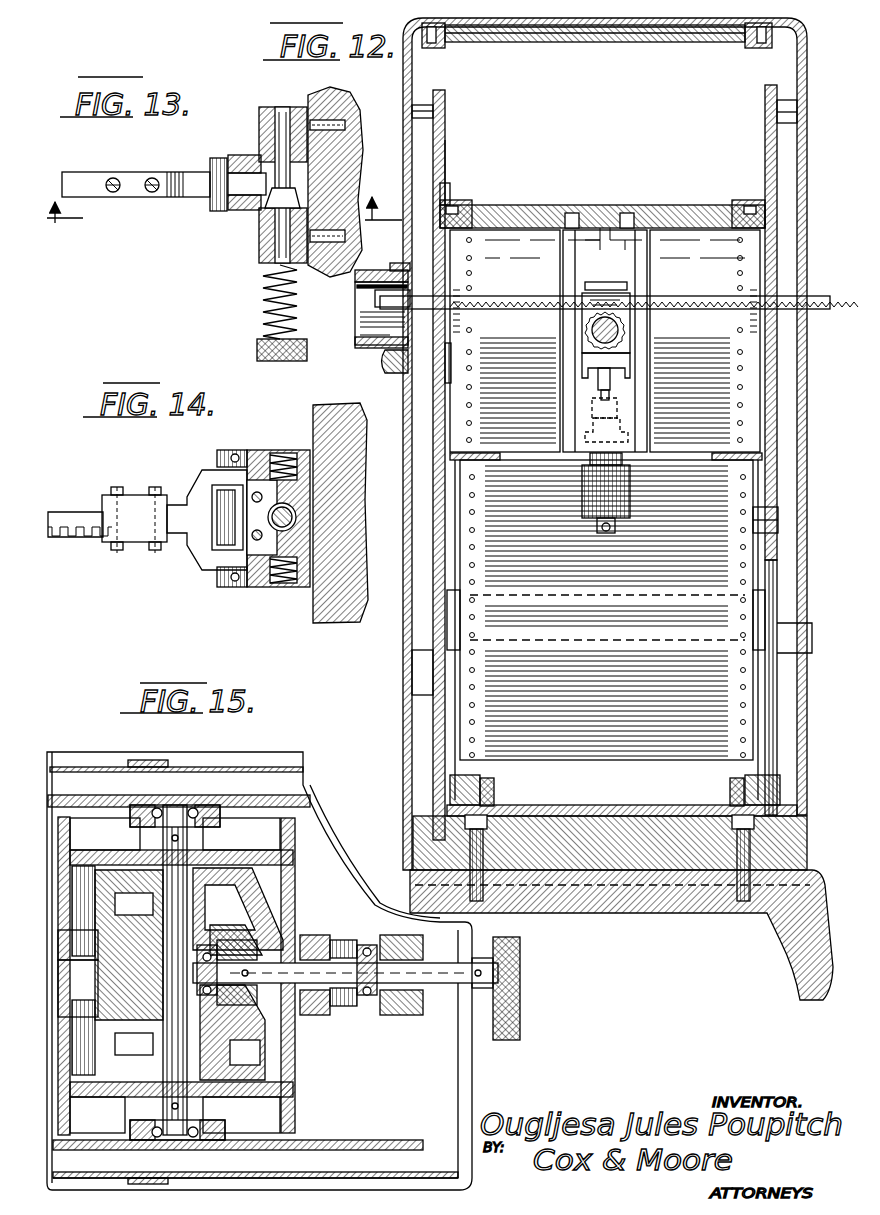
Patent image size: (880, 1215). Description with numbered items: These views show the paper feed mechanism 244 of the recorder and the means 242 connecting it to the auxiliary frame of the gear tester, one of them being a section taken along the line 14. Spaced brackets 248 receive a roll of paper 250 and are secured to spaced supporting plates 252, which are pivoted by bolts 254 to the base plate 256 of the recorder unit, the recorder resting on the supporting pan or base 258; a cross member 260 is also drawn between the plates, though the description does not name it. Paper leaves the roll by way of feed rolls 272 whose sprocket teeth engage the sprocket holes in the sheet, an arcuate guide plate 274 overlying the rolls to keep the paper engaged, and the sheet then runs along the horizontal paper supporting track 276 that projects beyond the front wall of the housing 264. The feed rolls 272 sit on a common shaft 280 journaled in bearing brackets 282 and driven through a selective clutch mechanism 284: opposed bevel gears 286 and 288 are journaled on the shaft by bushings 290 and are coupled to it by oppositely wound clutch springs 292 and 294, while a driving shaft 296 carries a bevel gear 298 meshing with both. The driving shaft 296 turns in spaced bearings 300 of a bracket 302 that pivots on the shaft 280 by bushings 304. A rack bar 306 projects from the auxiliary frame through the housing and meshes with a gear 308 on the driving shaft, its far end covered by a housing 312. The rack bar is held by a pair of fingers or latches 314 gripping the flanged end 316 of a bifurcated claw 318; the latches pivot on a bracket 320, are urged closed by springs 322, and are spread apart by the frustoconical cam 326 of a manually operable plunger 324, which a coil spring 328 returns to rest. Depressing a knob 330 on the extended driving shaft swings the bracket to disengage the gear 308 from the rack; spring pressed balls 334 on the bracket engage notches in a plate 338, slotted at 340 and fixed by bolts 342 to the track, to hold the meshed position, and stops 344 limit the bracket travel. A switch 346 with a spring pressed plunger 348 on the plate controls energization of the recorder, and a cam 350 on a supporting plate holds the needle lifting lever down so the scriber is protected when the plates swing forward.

In FIG. 13, the section line of FIG. 14 is at (224, 226).
In FIG. 13, the connecting means 242 is at (191, 219).
In FIG. 14, the connecting means 242 is at (198, 580).
In FIG. 12, the paper feed mechanism 244 is at (729, 198).
In FIG. 12, the brackets 248 is at (462, 640).
In FIG. 12, the roll of paper 250 is at (568, 752).
In FIG. 12, the supporting plates 252 is at (772, 691).
In FIG. 15, the supporting plates 252 is at (93, 797).
In FIG. 12, the bolts 254 is at (495, 793).
In FIG. 12, the base plate 256 is at (637, 805).
In FIG. 12, the supporting pan or base 258 is at (677, 905).
In FIG. 12, the cross member 260 is at (770, 537).
In FIG. 15, the housing 264 is at (190, 767).
In FIG. 12, the feed rolls 272 is at (487, 237).
In FIG. 15, the feed rolls 272 is at (295, 847).
In FIG. 12, the arcuate guide plate 274 is at (455, 205).
In FIG. 12, the paper supporting track 276 is at (550, 213).
In FIG. 15, the shaft 280 is at (203, 847).
In FIG. 12, the bearing brackets 282 is at (448, 372).
In FIG. 15, the bearing brackets 282 is at (215, 805).
In FIG. 15, the selective clutch mechanism 284 is at (232, 920).
In FIG. 15, the bevel gear 286 is at (222, 908).
In FIG. 15, the bevel gear 288 is at (219, 1027).
In FIG. 15, the bushings 290 is at (117, 970).
In FIG. 15, the clutch spring 292 is at (112, 953).
In FIG. 15, the clutch spring 294 is at (107, 995).
In FIG. 12, the driving shaft 296 is at (593, 330).
In FIG. 15, the driving shaft 296 is at (293, 993).
In FIG. 15, the bevel gear 298 is at (240, 937).
In FIG. 15, the bearings 300 is at (367, 947).
In FIG. 12, the bracket 302 is at (588, 385).
In FIG. 15, the bracket 302 is at (239, 1063).
In FIG. 15, the bushings 304 is at (145, 870).
In FIG. 12, the rack bar 306 is at (497, 295).
In FIG. 13, the rack bar 306 is at (78, 176).
In FIG. 14, the rack bar 306 is at (66, 512).
In FIG. 12, the gear 308 is at (620, 323).
In FIG. 15, the gear 308 is at (342, 1013).
In FIG. 12, the housing 312 is at (357, 347).
In FIG. 13, the fingers or latches 314 is at (247, 155).
In FIG. 14, the fingers or latches 314 is at (192, 477).
In FIG. 13, the flanged end 316 is at (220, 158).
In FIG. 14, the flanged end 316 is at (213, 487).
In FIG. 13, the bifurcated bar or claw 318 is at (132, 176).
In FIG. 14, the bifurcated bar or claw 318 is at (137, 495).
In FIG. 13, the bracket 320 is at (304, 96).
In FIG. 14, the bracket 320 is at (288, 583).
In FIG. 14, the springs 322 is at (282, 453).
In FIG. 13, the plunger 324 is at (283, 243).
In FIG. 14, the plunger 324 is at (215, 573).
In FIG. 13, the frustoconical cam 326 is at (258, 222).
In FIG. 14, the frustoconical cam 326 is at (248, 450).
In FIG. 13, the coil spring 328 is at (267, 277).
In FIG. 15, the knob 330 is at (507, 1041).
In FIG. 12, the spring pressed balls 334 is at (580, 310).
In FIG. 12, the plate 338 is at (633, 398).
In FIG. 15, the plate 338 is at (423, 1020).
In FIG. 12, the slot 340 is at (627, 365).
In FIG. 12, the bolts 342 is at (562, 248).
In FIG. 12, the stops 344 is at (600, 292).
In FIG. 12, the switch 346 is at (593, 505).
In FIG. 12, the spring pressed plunger 348 is at (590, 413).
In FIG. 12, the cam 350 is at (450, 185).